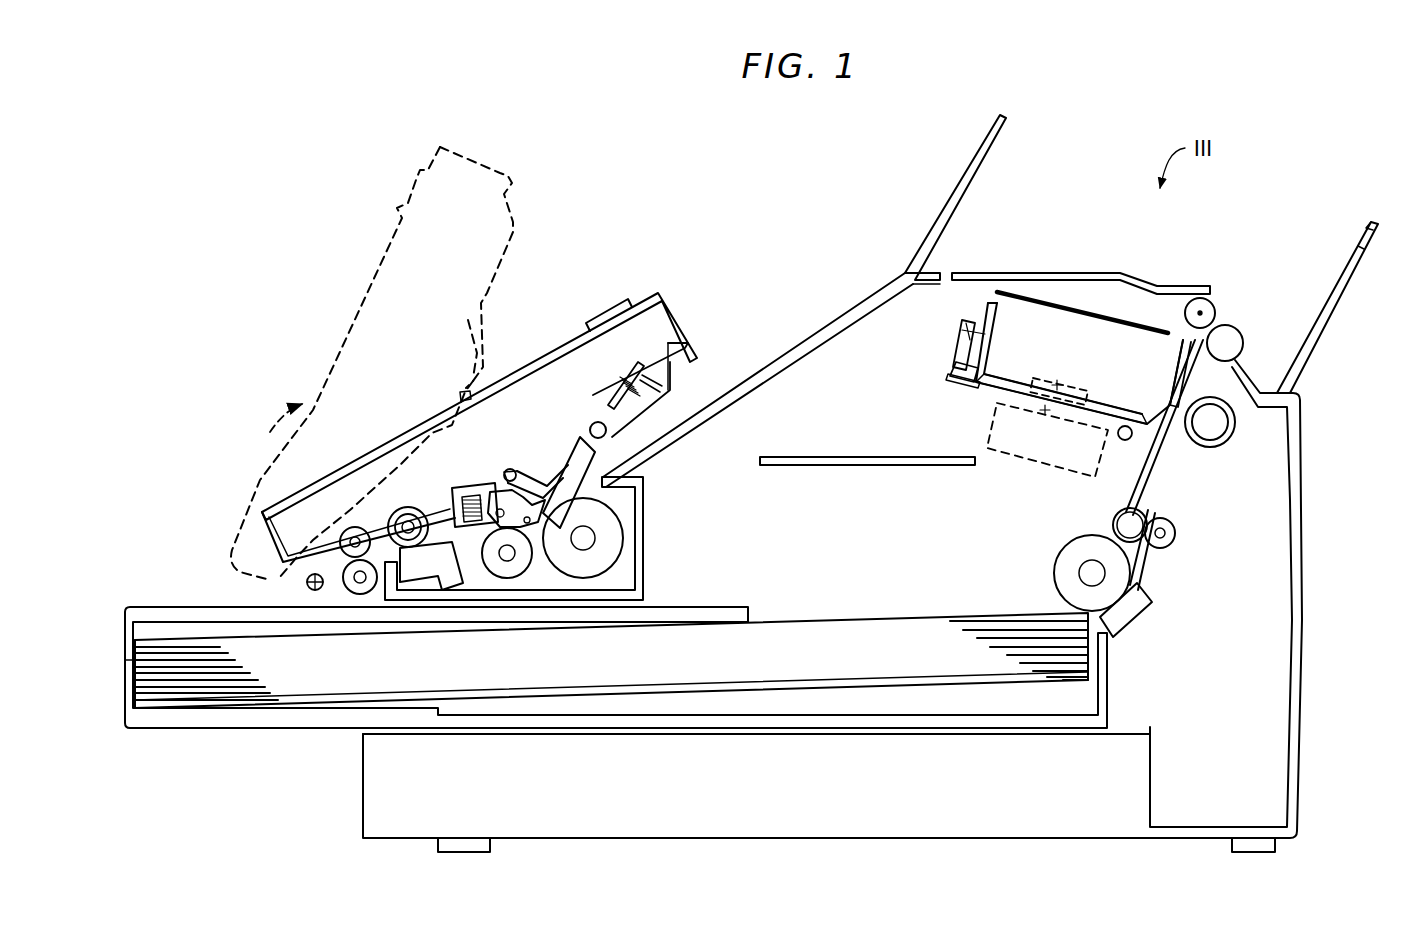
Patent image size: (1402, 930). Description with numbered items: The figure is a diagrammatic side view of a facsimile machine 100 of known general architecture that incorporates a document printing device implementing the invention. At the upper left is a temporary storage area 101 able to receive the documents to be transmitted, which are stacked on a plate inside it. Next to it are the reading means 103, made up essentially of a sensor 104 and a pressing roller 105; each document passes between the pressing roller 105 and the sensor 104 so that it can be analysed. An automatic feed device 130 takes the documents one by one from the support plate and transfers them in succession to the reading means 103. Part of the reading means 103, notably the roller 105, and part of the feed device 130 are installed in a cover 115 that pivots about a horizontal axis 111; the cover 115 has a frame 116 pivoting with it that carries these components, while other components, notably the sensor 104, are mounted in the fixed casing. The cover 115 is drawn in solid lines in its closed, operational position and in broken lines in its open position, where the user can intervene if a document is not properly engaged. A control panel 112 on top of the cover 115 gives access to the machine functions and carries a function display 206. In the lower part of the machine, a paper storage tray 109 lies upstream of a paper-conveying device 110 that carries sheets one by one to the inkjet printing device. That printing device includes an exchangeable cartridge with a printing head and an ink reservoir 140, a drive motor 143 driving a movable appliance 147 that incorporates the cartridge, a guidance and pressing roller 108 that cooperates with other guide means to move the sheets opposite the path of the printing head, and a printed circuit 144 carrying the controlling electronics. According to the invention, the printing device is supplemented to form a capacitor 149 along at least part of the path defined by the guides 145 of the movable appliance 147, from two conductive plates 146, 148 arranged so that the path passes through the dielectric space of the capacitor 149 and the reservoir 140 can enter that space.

The facsimile machine 100 is at (576, 214).
The temporary storage area 101 is at (745, 266).
The reading means 103 is at (391, 482).
The sensor 104 is at (433, 578).
The pressing roller 105 is at (410, 520).
The guidance and pressing roller 108 is at (1210, 434).
The paper storage tray 109 is at (837, 618).
The paper-conveying device 110 is at (1160, 590).
The horizontal axis 111 is at (307, 578).
The control panel 112 is at (533, 360).
The cover 115 is at (324, 466).
The frame 116 is at (440, 508).
The automatic feed device 130 is at (546, 466).
The ink reservoir 140 is at (1015, 305).
The drive motor 143 is at (1018, 450).
The printed circuit 144 is at (862, 462).
The guides 145 is at (1127, 441).
The conductive plate 146 is at (1100, 322).
The movable appliance 147 is at (983, 307).
The conductive plate 148 is at (1105, 415).
The capacitor 149 is at (1062, 310).
The function display 206 is at (606, 299).